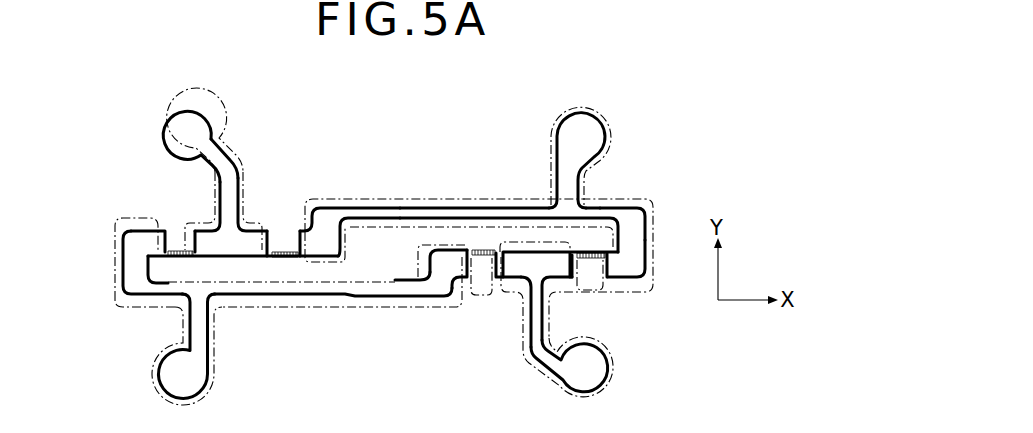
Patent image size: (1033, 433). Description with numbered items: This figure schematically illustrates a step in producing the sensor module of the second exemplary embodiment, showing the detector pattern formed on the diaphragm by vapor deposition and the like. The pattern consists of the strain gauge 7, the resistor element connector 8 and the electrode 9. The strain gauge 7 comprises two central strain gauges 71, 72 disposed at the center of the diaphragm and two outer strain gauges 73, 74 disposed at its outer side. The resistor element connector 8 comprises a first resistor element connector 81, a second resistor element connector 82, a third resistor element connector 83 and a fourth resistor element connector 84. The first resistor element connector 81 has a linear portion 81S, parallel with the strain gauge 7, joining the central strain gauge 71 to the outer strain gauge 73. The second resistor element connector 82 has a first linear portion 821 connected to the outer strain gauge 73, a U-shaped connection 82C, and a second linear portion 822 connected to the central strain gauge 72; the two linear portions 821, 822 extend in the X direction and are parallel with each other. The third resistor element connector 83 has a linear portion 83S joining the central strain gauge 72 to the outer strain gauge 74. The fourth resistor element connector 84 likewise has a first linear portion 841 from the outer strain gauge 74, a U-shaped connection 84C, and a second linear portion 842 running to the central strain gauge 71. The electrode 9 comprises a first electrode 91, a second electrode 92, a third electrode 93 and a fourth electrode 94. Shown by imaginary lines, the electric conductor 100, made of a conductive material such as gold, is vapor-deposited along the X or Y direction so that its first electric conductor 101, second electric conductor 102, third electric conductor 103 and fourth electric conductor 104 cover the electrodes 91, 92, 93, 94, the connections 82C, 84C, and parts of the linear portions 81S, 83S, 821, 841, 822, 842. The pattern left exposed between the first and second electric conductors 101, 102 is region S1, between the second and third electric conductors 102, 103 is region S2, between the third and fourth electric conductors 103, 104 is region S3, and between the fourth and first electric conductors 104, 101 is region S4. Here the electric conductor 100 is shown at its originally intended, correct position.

The strain gauge 7 is at (286, 161).
The resistor element connector 8 is at (242, 216).
The electrode 9 is at (231, 154).
The central strain gauge 71 is at (279, 258).
The central strain gauge 72 is at (489, 262).
The outer strain gauge 73 is at (180, 254).
The outer strain gauge 74 is at (598, 266).
The first resistor element connector 81 is at (264, 242).
The linear portion 81S is at (235, 246).
The second resistor element connector 82 is at (122, 291).
The connection 82C is at (313, 292).
The third resistor element connector 83 is at (512, 278).
The linear portion 83S is at (535, 262).
The fourth resistor element connector 84 is at (632, 218).
The connection 84C is at (606, 210).
The first electrode 91 is at (174, 132).
The second electrode 92 is at (198, 375).
The third electrode 93 is at (568, 378).
The fourth electrode 94 is at (594, 134).
The electric conductor 100 is at (401, 199).
The first electric conductor 101 is at (190, 103).
The second electric conductor 102 is at (170, 399).
The third electric conductor 103 is at (616, 382).
The fourth electric conductor 104 is at (552, 130).
The first linear portion 821 is at (165, 238).
The second linear portion 822 is at (471, 250).
The first linear portion 841 is at (608, 280).
The second linear portion 842 is at (313, 236).
The exposed region S1 is at (184, 249).
The exposed region S2 is at (478, 258).
The exposed region S3 is at (584, 260).
The exposed region S4 is at (283, 252).